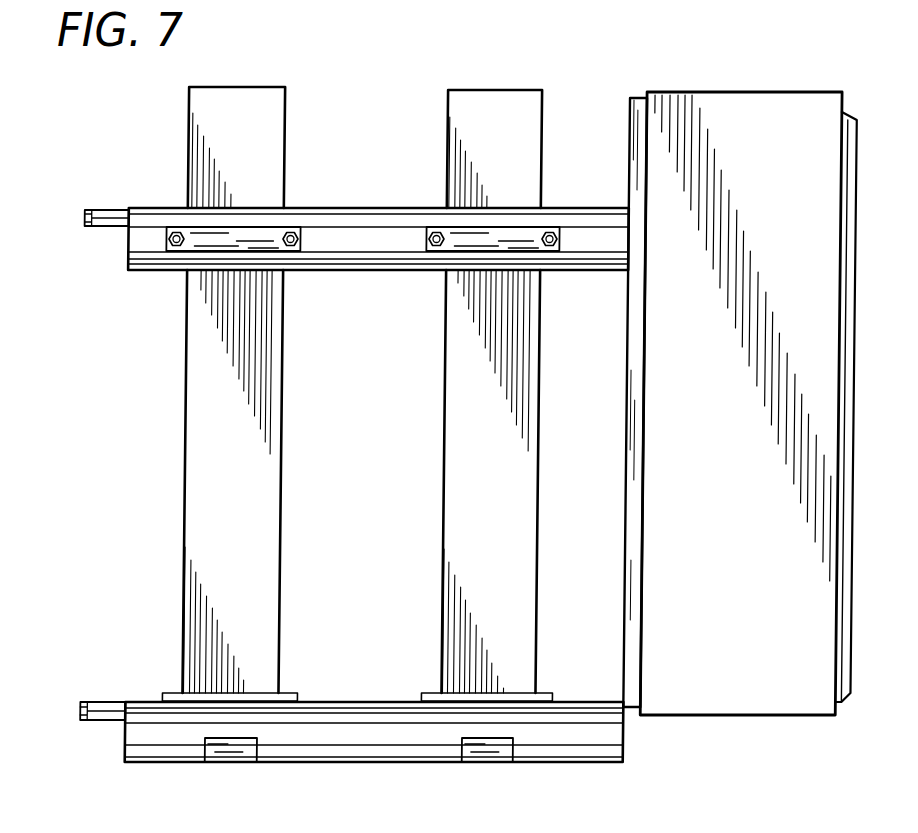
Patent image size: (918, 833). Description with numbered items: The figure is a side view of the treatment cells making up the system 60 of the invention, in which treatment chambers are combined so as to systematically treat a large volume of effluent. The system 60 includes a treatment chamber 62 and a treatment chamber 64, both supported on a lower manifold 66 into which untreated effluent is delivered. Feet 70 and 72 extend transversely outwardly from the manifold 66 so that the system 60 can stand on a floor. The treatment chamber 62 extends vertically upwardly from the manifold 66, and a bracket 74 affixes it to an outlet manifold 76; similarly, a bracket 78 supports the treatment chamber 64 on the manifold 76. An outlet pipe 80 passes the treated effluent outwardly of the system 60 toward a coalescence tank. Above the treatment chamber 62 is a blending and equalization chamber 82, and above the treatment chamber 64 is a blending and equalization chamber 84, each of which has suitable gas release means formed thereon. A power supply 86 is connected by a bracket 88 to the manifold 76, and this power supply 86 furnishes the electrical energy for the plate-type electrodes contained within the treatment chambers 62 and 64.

The system 60 is at (160, 568).
The treatment chamber 62 is at (456, 390).
The treatment chamber 64 is at (196, 388).
The manifold 66 is at (351, 734).
The foot 70 is at (228, 762).
The foot 72 is at (490, 752).
The bracket 74 is at (522, 232).
The outlet manifold 76 is at (323, 215).
The bracket 78 is at (270, 228).
The outlet pipe 80 is at (95, 210).
The blending and equalization chamber 82 is at (527, 113).
The blending and equalization chamber 84 is at (270, 112).
The power supply 86 is at (654, 550).
The bracket 88 is at (626, 290).